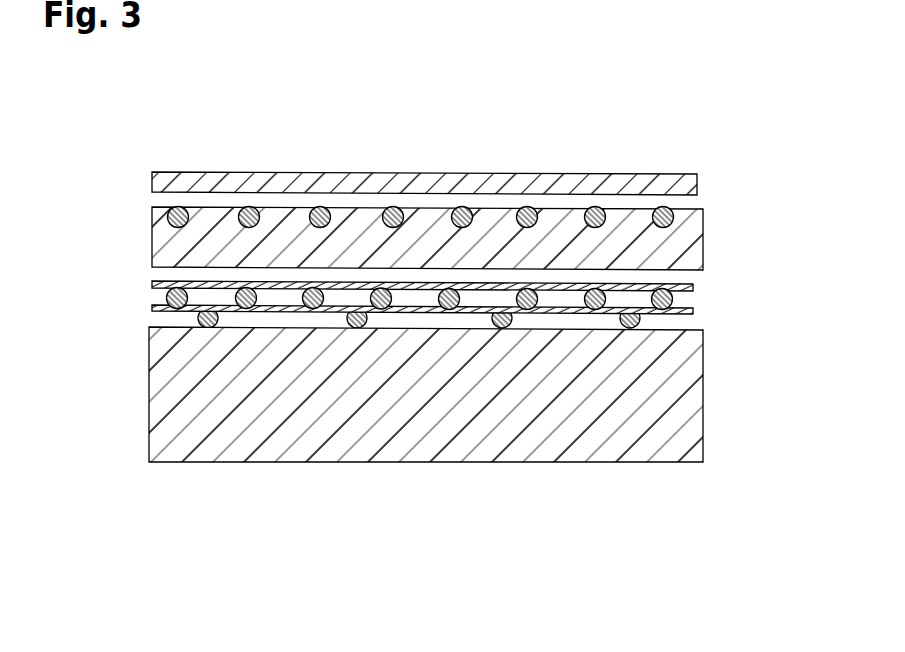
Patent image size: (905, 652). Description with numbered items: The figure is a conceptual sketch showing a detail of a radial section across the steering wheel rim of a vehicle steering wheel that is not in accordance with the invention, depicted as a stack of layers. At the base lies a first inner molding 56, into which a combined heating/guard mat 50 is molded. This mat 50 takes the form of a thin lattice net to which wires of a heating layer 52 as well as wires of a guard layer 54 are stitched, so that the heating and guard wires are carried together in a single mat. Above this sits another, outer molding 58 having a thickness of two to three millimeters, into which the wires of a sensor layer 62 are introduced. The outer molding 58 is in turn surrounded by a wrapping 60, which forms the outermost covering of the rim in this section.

The combined heating/guard mat 50 is at (419, 308).
The heating layer 52 is at (153, 311).
The guard layer 54 is at (152, 283).
The first inner molding 56 is at (683, 377).
The outer molding 58 is at (683, 244).
The wrapping 60 is at (683, 185).
The sensor layer 62 is at (170, 212).